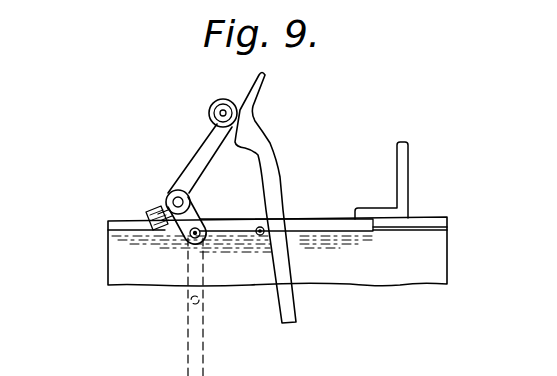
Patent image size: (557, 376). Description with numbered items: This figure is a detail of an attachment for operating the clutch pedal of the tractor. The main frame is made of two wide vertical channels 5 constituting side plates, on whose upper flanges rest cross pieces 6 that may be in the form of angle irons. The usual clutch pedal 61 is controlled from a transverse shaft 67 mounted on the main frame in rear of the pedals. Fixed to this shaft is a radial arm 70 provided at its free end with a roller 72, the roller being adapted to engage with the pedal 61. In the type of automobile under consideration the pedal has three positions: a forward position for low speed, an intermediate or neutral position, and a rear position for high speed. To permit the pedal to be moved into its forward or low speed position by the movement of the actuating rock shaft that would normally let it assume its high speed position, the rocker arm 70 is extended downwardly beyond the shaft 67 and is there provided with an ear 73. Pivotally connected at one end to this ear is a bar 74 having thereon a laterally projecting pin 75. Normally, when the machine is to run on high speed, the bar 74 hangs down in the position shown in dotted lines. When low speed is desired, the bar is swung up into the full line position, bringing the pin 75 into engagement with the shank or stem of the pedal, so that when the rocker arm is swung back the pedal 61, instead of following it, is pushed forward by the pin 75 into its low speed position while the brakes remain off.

The vertical channel 5 is at (428, 253).
The cross piece 6 is at (402, 168).
The clutch pedal 61 is at (257, 122).
The transverse shaft 67 is at (168, 193).
The radial arm 70 is at (202, 142).
The roller 72 is at (212, 102).
The ear 73 is at (183, 240).
The bar 74 is at (240, 303).
The pin 75 is at (258, 227).